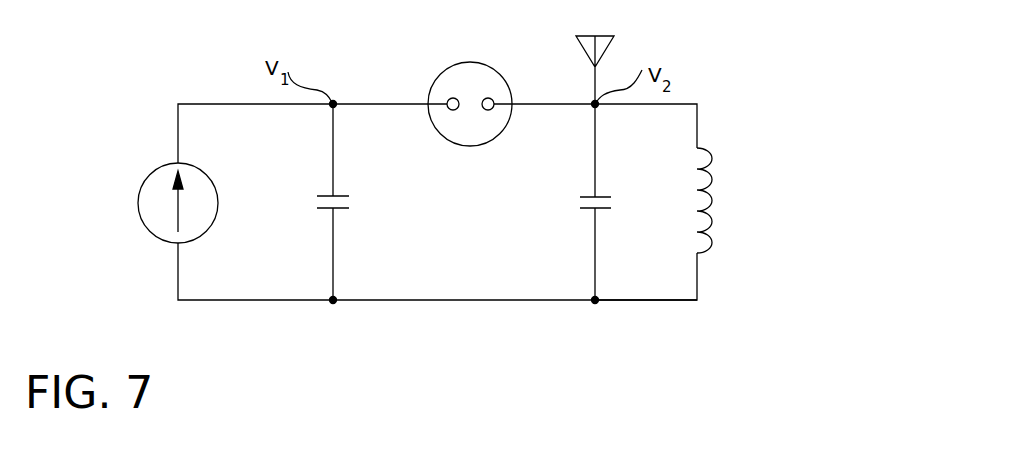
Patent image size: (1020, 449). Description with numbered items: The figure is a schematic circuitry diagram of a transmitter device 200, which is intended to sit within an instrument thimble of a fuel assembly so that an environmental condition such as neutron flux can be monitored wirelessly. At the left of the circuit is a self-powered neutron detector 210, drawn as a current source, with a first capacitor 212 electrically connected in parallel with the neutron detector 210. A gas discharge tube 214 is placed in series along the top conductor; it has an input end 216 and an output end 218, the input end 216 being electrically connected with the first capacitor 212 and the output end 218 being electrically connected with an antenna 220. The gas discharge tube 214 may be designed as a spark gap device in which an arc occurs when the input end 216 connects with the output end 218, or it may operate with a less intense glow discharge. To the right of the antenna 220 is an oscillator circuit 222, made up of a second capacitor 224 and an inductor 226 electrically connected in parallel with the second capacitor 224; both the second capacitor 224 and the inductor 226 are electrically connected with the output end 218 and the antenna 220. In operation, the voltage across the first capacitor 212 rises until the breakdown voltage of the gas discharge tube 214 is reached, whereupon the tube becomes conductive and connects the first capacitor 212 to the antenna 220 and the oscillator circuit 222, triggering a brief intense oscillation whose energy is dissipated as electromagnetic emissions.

The transmitter device 200 is at (133, 255).
The self-powered neutron detector 210 is at (138, 193).
The first capacitor 212 is at (342, 212).
The gas discharge tube 214 is at (470, 148).
The input end 216 is at (448, 100).
The output end 218 is at (488, 97).
The antenna 220 is at (615, 45).
The oscillator circuit 222 is at (698, 312).
The second capacitor 224 is at (603, 212).
The inductor 226 is at (712, 200).